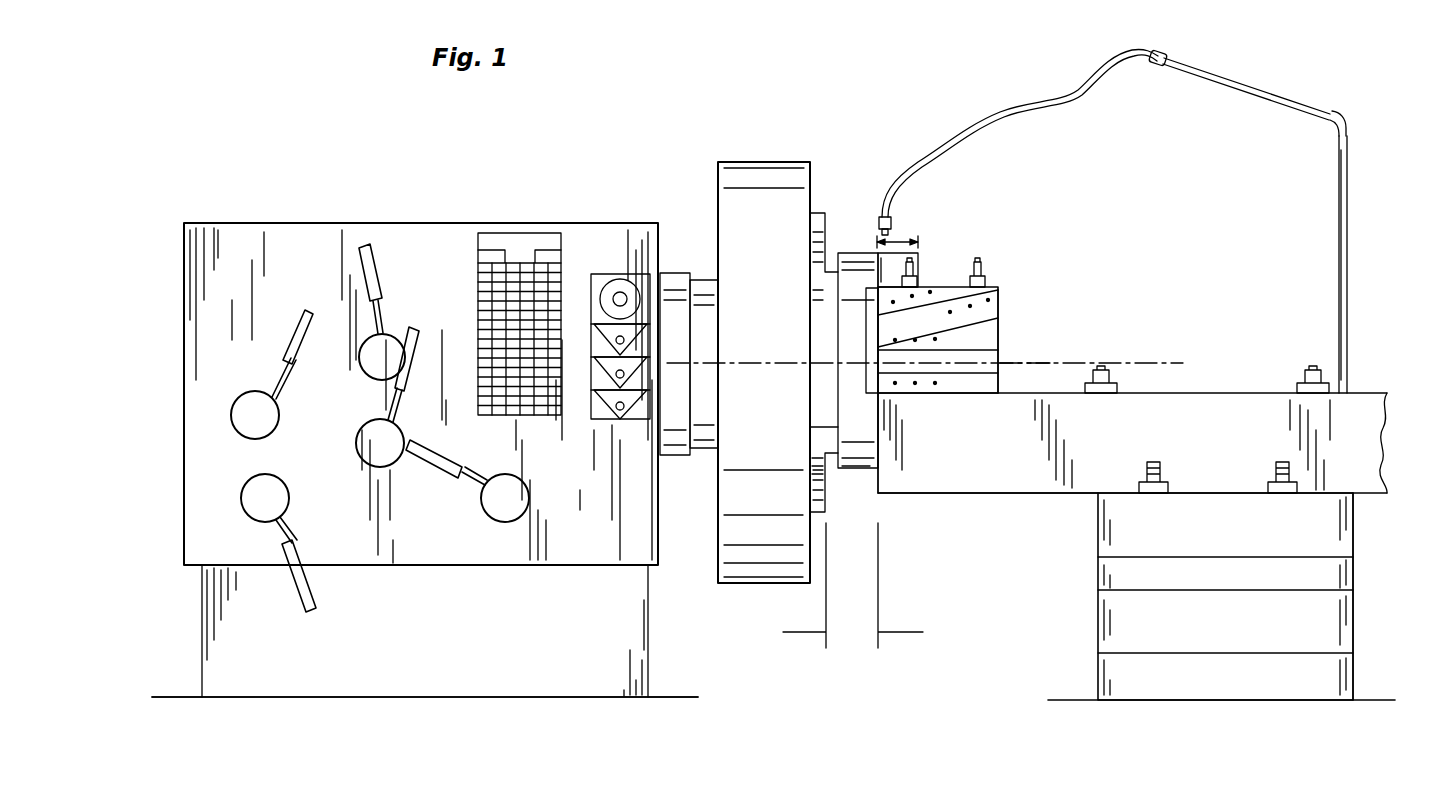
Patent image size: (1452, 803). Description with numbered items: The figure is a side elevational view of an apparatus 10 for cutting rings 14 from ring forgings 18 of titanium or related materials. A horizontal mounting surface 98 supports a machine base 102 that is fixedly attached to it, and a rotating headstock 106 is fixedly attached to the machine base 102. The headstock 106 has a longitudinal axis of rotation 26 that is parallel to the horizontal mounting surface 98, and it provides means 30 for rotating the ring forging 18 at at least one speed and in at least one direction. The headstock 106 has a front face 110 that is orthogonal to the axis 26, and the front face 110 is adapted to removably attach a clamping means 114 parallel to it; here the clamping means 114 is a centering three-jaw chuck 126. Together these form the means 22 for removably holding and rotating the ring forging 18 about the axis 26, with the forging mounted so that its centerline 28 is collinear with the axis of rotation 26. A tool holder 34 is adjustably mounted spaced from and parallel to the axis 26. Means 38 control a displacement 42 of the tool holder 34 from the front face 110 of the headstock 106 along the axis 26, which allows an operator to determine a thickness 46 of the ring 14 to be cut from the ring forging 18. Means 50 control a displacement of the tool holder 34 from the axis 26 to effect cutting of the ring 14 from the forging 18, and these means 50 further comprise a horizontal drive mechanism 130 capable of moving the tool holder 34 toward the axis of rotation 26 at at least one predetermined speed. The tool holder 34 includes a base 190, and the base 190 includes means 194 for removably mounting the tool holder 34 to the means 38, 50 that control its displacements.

The apparatus 10 is at (625, 208).
The means for rotating the ring forging 30 is at (438, 258).
The machine base 102 is at (532, 673).
The horizontal mounting surface 98 is at (675, 700).
The rotating headstock 106 is at (705, 280).
The front face 110 is at (818, 212).
The clamping means 114 is at (827, 228).
The centering three-jaw chuck 126 is at (810, 498).
The ring forging 18 is at (857, 473).
The displacement 42 is at (852, 633).
The means for removably holding and rotating the ring forging 22 is at (885, 165).
The horizontal drive mechanism 130 is at (1357, 540).
The thickness 46 is at (903, 235).
The ring 14 is at (927, 260).
The tool holder 34 is at (1000, 320).
The centerline 28 is at (1015, 362).
The longitudinal axis 26 is at (1175, 363).
The base 190 is at (1000, 468).
The means for removably mounting 194 is at (1163, 478).
The means for controlling a displacement along the axis 38 is at (1112, 630).
The means for controlling a displacement from the axis 50 is at (1356, 522).